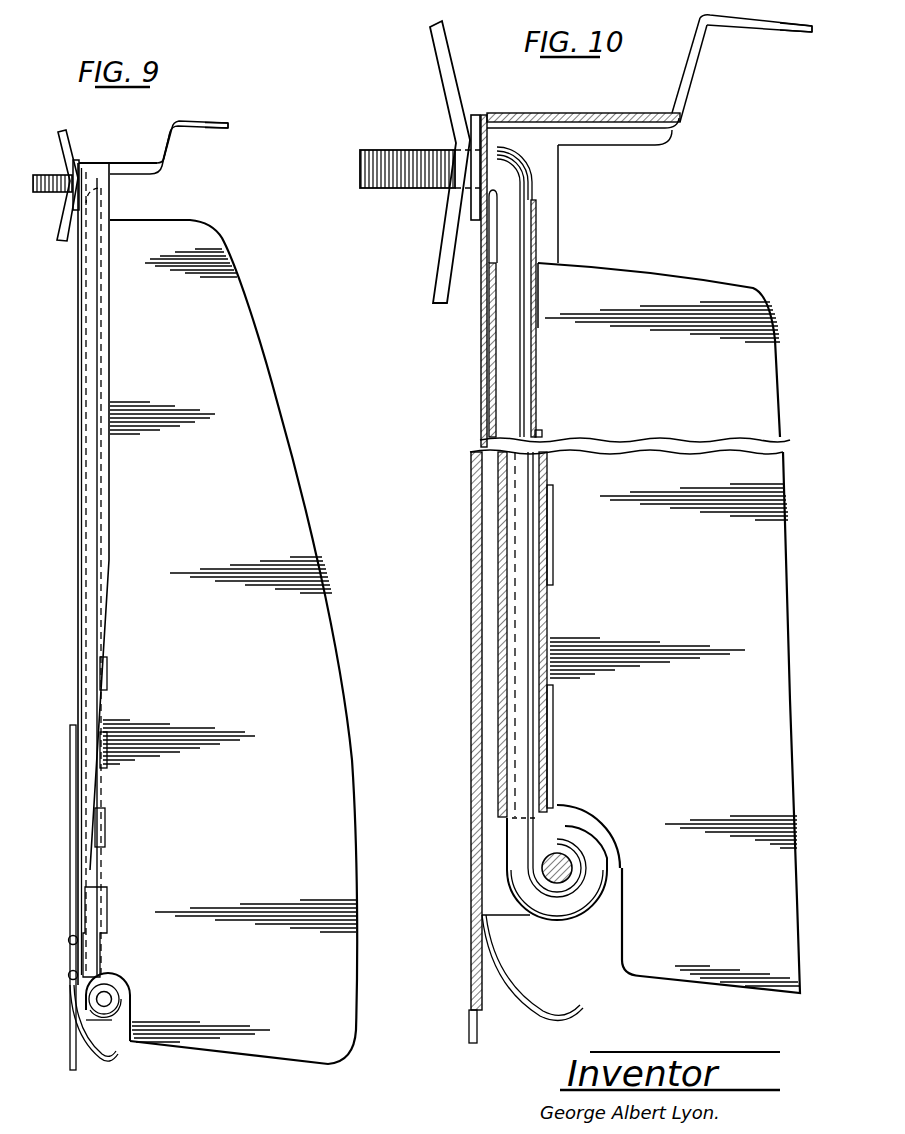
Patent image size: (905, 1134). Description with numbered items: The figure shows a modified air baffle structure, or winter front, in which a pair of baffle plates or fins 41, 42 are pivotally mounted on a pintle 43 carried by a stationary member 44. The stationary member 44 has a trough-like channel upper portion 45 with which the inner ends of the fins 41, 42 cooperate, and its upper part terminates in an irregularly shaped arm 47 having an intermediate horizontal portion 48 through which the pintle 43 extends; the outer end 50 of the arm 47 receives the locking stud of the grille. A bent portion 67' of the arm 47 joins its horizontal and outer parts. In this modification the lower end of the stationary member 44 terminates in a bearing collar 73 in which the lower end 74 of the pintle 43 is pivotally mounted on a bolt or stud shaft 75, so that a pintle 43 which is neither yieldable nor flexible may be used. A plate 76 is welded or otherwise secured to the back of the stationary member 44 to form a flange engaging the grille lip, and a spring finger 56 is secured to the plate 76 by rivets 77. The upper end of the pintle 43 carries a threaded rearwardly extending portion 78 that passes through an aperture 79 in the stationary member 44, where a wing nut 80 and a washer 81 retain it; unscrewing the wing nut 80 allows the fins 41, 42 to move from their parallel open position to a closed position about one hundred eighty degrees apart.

In FIG. 9, the baffle plate or fin 41 is at (255, 418).
In FIG. 10, the baffle plate or fin 42 is at (700, 300).
In FIG. 9, the pintle 43 is at (85, 319).
In FIG. 10, the pintle 43 is at (515, 406).
In FIG. 9, the stationary member 44 is at (77, 477).
In FIG. 10, the stationary member 44 is at (476, 382).
In FIG. 9, the channel upper portion 45 is at (77, 371).
In FIG. 10, the channel upper portion 45 is at (548, 232).
In FIG. 9, the arm 47 is at (172, 152).
In FIG. 10, the arm 47 is at (702, 52).
In FIG. 10, the intermediate horizontal portion 48 is at (638, 92).
In FIG. 9, the outer end of arm 50 is at (238, 112).
In FIG. 10, the outer end of arm 50 is at (801, 32).
In FIG. 9, the spring finger 56 is at (92, 1060).
In FIG. 10, the spring finger 56 is at (533, 994).
In FIG. 9, the bent portion of strip 67' is at (145, 140).
In FIG. 10, the bent portion of strip 67' is at (677, 70).
In FIG. 9, the bearing collar 73 is at (106, 1021).
In FIG. 9, the lower end of pintle 74 is at (72, 1014).
In FIG. 10, the lower end of pintle 74 is at (587, 890).
In FIG. 9, the bolt or stud shaft 75 is at (107, 1001).
In FIG. 10, the bolt or stud shaft 75 is at (567, 847).
In FIG. 9, the plate 76 is at (72, 818).
In FIG. 10, the plate 76 is at (470, 618).
In FIG. 9, the rivets 77 is at (67, 942).
In FIG. 9, the threaded rearwardly extending portion 78 is at (45, 176).
In FIG. 10, the threaded rearwardly extending portion 78 is at (393, 157).
In FIG. 10, the aperture 79 is at (488, 192).
In FIG. 9, the wing nut 80 is at (66, 147).
In FIG. 10, the wing nut 80 is at (447, 77).
In FIG. 9, the washer 81 is at (72, 205).
In FIG. 10, the washer 81 is at (477, 112).